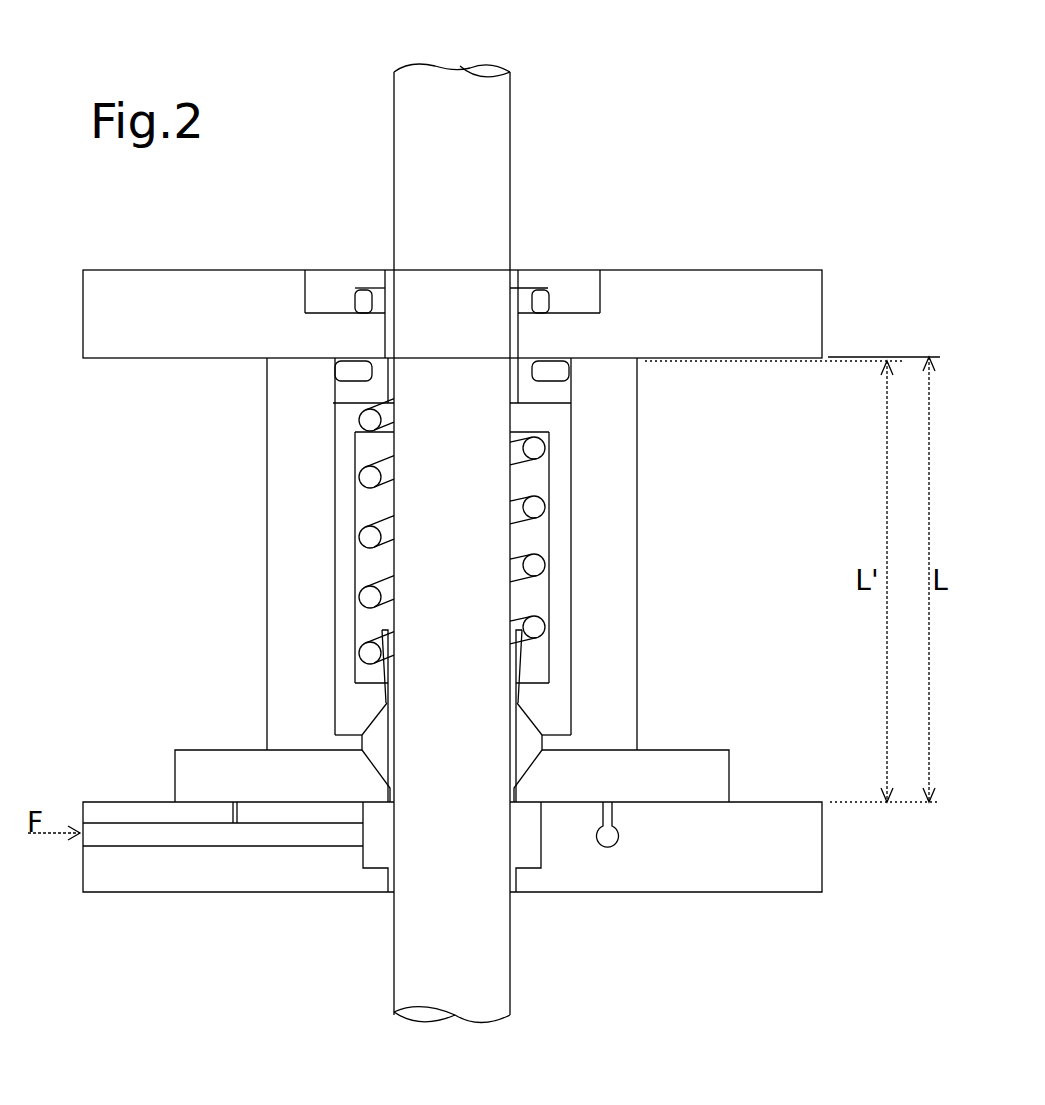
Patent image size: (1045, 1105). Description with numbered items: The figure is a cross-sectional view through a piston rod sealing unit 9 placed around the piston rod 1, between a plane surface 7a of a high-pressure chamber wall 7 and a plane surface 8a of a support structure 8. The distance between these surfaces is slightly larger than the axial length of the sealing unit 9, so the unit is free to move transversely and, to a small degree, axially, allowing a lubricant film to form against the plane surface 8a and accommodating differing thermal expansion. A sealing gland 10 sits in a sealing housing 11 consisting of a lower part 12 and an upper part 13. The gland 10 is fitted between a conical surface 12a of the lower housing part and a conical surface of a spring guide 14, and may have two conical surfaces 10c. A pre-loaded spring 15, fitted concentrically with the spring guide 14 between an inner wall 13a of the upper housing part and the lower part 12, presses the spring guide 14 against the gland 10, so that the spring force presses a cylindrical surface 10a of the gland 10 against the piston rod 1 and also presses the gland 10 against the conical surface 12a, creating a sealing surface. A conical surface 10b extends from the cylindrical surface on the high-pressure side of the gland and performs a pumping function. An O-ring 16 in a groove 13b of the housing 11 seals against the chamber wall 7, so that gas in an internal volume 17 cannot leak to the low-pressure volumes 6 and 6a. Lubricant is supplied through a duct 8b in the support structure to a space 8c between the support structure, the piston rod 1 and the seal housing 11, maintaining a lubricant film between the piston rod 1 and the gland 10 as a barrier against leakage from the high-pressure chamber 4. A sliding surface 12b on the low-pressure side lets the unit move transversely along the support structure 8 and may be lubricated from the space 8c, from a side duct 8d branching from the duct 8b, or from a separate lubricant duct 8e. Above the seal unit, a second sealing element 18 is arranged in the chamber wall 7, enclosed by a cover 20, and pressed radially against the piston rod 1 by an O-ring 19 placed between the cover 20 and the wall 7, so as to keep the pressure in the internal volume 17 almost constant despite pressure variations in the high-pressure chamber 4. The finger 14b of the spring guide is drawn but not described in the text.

The piston rod 1 is at (495, 100).
The high-pressure chamber 4 is at (344, 251).
The low-pressure volume 6 is at (340, 940).
The low-pressure volume 6a is at (130, 528).
The high-pressure chamber wall 7 is at (742, 280).
The plane surface of chamber wall 7a is at (718, 360).
The support structure 8 is at (800, 845).
The plane surface of support structure 8a is at (768, 800).
The lubricant duct 8b is at (150, 825).
The space 8c is at (525, 838).
The side duct 8d is at (235, 822).
The separate lubricant duct 8e is at (615, 845).
The sealing unit 9 is at (250, 478).
The sealing gland 10 is at (385, 715).
The cylindrical surface of gland 10a is at (372, 760).
The conical surface of gland 10b is at (388, 630).
The conical surface of gland 10c is at (385, 775).
The sealing housing 11 is at (265, 531).
The lower housing part 12 is at (682, 765).
The conical surface of lower housing part 12a is at (367, 773).
The sliding surface 12b is at (668, 815).
The upper housing part 13 is at (612, 528).
The inner wall of upper housing part 13a is at (557, 405).
The groove 13b is at (568, 380).
The spring guide 14 is at (565, 645).
The sleeve finger 14b is at (532, 690).
The pre-loaded spring 15 is at (540, 568).
The O-ring 16 is at (567, 357).
The internal volume 17 is at (375, 455).
The second sealing element 18 is at (521, 297).
The O-ring 19 is at (545, 288).
The cover 20 is at (588, 277).